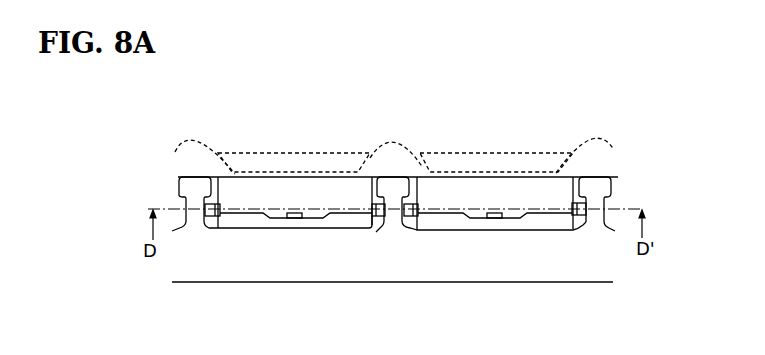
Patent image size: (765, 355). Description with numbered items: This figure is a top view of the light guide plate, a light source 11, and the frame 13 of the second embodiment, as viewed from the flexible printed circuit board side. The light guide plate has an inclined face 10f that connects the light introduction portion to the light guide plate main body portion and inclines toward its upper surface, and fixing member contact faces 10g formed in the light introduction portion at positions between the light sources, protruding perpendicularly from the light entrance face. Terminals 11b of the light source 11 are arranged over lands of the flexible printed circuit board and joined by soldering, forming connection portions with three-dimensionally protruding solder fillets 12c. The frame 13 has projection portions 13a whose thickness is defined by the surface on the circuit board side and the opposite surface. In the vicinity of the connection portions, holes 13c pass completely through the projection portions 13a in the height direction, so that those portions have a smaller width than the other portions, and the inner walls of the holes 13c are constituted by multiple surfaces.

The inclined face 10f is at (288, 157).
The fixing member contact faces 10g is at (422, 167).
The light source 11 is at (236, 192).
The terminals 11b is at (375, 219).
The solder fillets 12c is at (380, 222).
The frame 13 is at (204, 273).
The projection portions 13a is at (388, 177).
The holes 13c is at (417, 231).